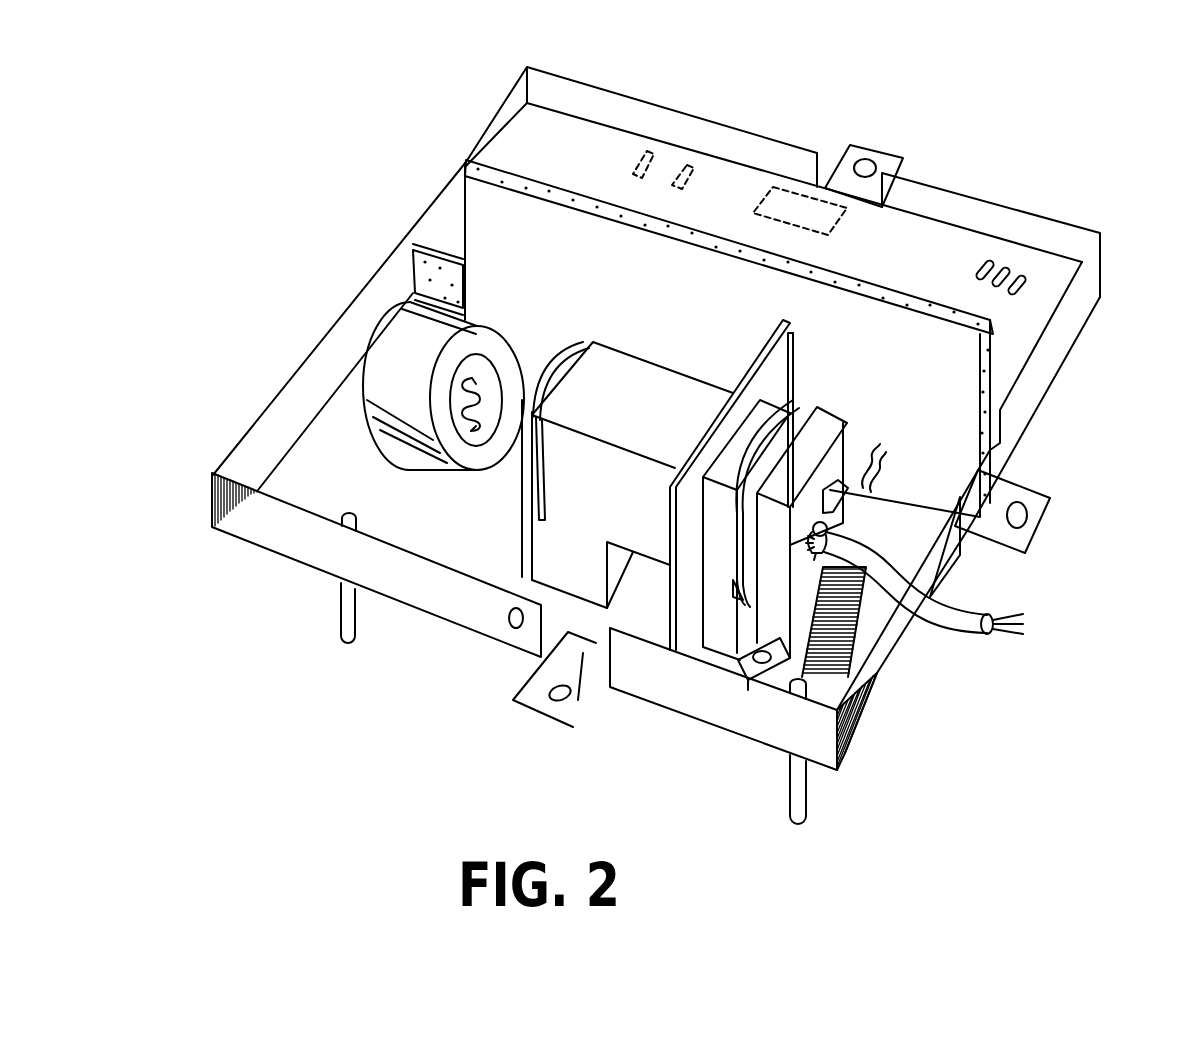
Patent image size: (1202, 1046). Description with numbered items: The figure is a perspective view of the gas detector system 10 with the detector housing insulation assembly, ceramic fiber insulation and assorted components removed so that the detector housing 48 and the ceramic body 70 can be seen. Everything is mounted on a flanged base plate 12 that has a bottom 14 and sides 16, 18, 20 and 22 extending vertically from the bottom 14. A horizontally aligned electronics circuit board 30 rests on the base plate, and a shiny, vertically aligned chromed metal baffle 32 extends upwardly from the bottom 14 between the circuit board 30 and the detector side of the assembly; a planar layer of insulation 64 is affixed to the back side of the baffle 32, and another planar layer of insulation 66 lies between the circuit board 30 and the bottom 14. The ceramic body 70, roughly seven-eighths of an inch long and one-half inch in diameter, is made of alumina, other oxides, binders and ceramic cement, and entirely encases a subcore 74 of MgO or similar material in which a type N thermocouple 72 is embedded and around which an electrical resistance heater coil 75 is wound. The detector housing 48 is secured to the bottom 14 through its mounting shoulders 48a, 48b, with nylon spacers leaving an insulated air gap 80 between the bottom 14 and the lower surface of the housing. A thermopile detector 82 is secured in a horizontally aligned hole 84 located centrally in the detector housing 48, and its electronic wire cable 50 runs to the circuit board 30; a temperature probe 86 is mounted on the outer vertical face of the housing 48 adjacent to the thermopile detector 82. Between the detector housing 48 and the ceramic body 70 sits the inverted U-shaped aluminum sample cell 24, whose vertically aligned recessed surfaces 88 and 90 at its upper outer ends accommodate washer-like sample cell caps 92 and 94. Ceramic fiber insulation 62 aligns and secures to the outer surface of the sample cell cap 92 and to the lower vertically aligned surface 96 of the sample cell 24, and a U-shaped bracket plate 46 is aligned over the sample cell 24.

The gas detector system 10 is at (1043, 140).
The flanged base plate 12 is at (532, 690).
The bottom 14 is at (963, 533).
The side 16 is at (483, 617).
The side 18 is at (247, 462).
The side 20 is at (733, 147).
The side 22 is at (1063, 333).
The aluminum sample cell 24 is at (671, 342).
The electronics circuit board 30 is at (1052, 279).
The chromed metal baffle 32 is at (488, 210).
The U-shaped bracket plate 46 is at (767, 343).
The detector housing 48 is at (820, 417).
The mounting shoulder 48a is at (783, 667).
The mounting shoulder 48b is at (857, 530).
The electronic wire cable 50 is at (960, 622).
The ceramic fiber insulation 62 is at (527, 523).
The planar layer of insulation 64 is at (487, 157).
The planar layer of insulation 66 is at (427, 273).
The ceramic body 70 is at (367, 358).
The type N thermocouple 72 is at (508, 368).
The subcore 74 is at (478, 382).
The electrical resistance heater coil 75 is at (483, 418).
The insulated air gap 80 is at (830, 648).
The thermopile detector 82 is at (820, 522).
The horizontally aligned hole 84 is at (817, 556).
The temperature probe 86 is at (843, 425).
The recessed surface 88 is at (597, 345).
The recessed surface 90 is at (795, 405).
The sample cell cap 92 is at (537, 467).
The sample cell cap 94 is at (733, 585).
The lower vertically aligned surface 96 is at (528, 560).